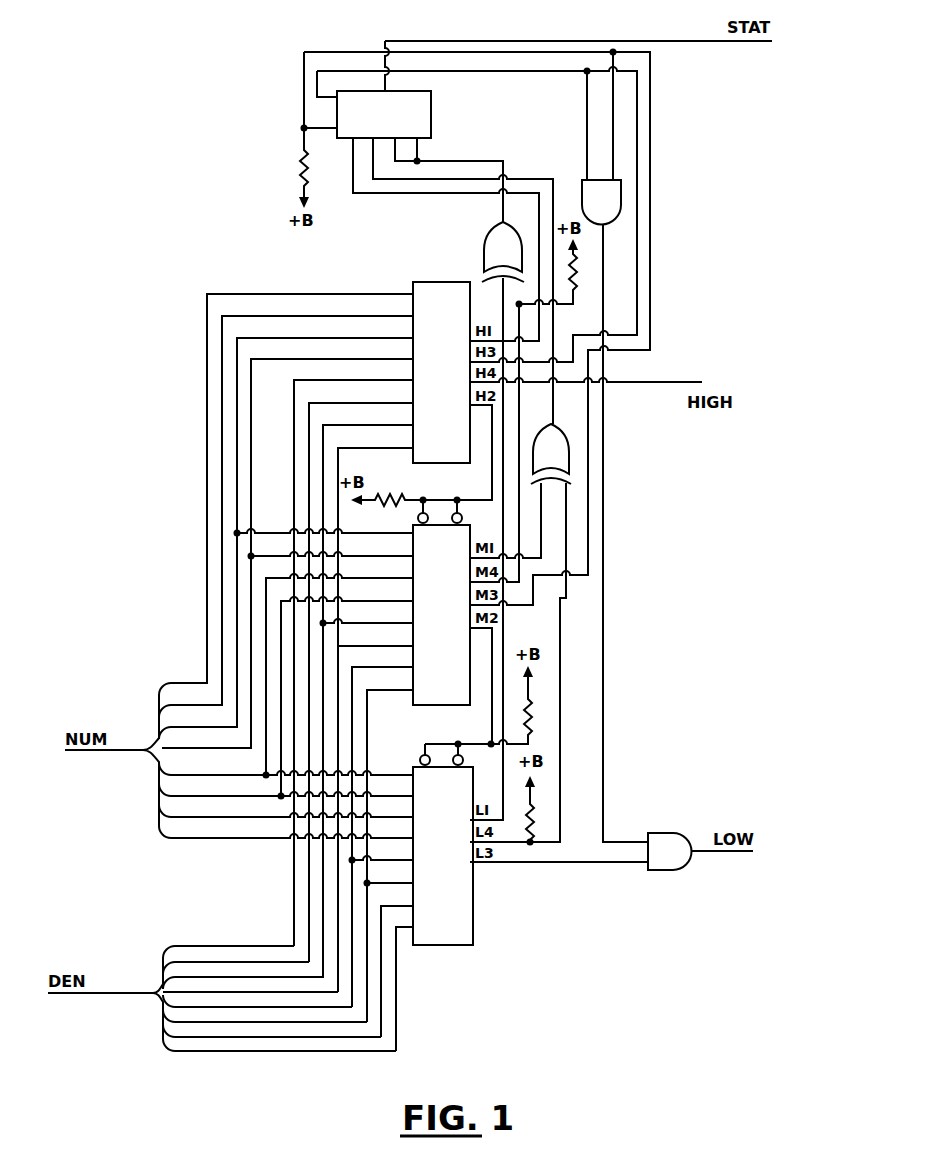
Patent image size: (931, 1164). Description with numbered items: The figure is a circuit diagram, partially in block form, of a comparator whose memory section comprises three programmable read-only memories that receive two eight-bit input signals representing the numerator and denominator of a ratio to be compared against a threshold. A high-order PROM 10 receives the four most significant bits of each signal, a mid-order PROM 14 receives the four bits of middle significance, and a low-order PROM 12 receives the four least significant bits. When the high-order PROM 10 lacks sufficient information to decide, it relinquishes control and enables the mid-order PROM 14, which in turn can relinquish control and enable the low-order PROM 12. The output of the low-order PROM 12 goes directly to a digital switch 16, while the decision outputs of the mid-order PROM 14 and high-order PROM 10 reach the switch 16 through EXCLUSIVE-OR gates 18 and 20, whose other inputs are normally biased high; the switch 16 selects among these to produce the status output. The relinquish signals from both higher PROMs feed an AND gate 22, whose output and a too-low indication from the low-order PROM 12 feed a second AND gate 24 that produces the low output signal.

The high-order PROM 10 is at (428, 286).
The low-order PROM 12 is at (468, 935).
The mid-order PROM 14 is at (430, 700).
The digital switch 16 is at (431, 115).
The EXCLUSIVE-OR gate 18 is at (569, 452).
The EXCLUSIVE-OR gate 20 is at (497, 232).
The AND gate 22 is at (621, 200).
The second AND gate 24 is at (670, 836).